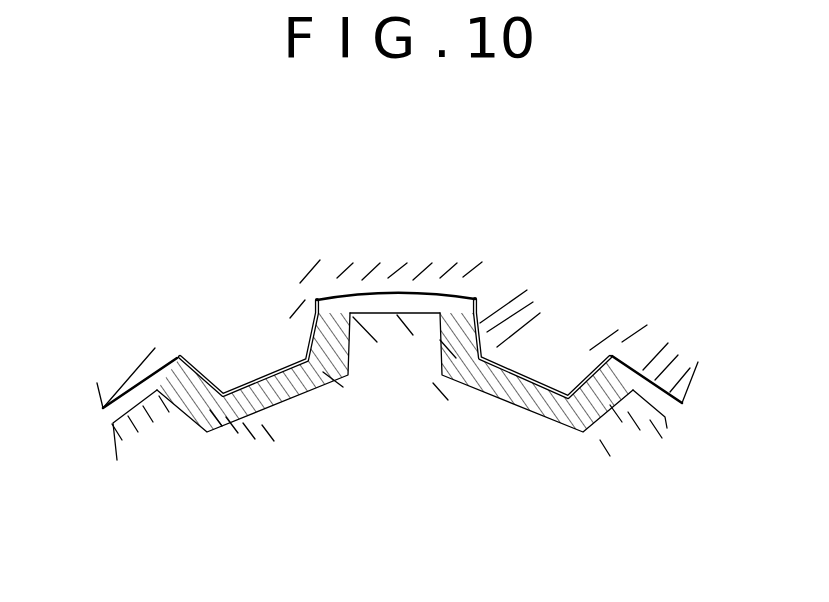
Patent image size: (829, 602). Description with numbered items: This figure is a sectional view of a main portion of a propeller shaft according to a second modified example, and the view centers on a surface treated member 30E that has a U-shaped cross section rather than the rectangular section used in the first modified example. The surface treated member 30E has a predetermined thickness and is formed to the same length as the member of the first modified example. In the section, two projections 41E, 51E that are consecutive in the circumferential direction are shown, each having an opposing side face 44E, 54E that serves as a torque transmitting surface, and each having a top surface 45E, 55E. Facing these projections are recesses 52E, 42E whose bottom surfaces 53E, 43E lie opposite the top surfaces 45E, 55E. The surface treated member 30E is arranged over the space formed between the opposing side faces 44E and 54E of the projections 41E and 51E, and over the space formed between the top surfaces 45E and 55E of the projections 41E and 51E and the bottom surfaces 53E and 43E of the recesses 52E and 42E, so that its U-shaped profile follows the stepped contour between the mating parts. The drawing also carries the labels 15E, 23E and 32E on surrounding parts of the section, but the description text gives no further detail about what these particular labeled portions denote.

The first panel 15E is at (113, 501).
The second panel 23E is at (141, 339).
The surface treated member 30E is at (307, 345).
The side wall portion 32E is at (303, 365).
The projection 41E is at (470, 315).
The recess 42E is at (388, 516).
The bottom surface 43E is at (278, 382).
The side face 44E is at (208, 440).
The top surface 45E is at (412, 320).
The projection 51E is at (178, 413).
The recess 52E is at (510, 182).
The bottom surface 53E is at (413, 297).
The side face 54E is at (327, 297).
The top surface 55E is at (222, 392).